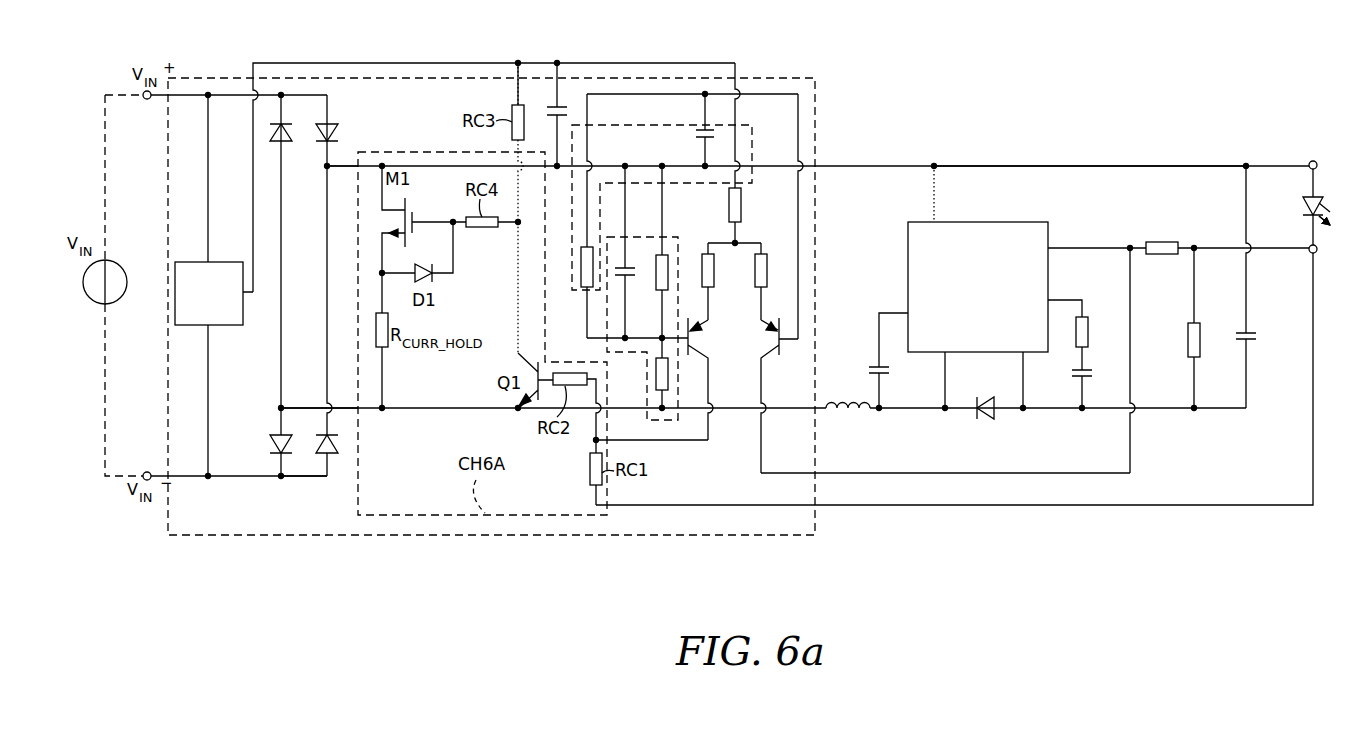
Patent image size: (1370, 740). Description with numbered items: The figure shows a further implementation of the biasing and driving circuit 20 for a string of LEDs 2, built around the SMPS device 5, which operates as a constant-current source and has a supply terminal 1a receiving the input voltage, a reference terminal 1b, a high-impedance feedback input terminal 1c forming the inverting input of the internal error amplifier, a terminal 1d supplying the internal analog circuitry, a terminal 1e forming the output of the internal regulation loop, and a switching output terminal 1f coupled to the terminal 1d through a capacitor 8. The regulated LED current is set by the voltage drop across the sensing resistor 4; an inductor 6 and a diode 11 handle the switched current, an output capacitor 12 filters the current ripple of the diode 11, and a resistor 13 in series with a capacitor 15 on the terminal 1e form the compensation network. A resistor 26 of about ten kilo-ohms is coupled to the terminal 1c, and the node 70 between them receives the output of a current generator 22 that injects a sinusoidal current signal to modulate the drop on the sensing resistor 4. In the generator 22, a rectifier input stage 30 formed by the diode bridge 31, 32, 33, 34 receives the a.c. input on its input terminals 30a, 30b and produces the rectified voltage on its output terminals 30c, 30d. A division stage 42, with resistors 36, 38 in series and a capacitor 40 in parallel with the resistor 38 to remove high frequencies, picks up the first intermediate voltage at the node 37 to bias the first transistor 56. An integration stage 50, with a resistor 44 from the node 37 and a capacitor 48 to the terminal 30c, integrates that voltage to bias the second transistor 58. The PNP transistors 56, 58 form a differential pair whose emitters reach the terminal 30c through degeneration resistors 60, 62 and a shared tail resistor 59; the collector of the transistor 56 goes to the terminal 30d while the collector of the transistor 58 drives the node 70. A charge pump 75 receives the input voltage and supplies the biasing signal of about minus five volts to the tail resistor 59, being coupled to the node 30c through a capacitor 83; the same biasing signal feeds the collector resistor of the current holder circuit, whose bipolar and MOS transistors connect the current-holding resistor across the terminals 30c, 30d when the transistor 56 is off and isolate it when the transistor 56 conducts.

The string of LEDs 2 is at (1305, 200).
The sensing resistor 4 is at (1200, 326).
The SMPS device 5 is at (992, 235).
The inductor 6 is at (838, 404).
The capacitor 8 is at (882, 365).
The diode 11 is at (985, 421).
The output capacitor 12 is at (1252, 331).
The resistor 13 is at (1087, 317).
The capacitor 15 is at (1075, 378).
The biasing and driving circuit 20 is at (968, 118).
The current generator 22 is at (768, 77).
The resistor 26 is at (1162, 256).
The rectifier input stage 30 is at (267, 324).
The input terminal of the rectifier 30a is at (283, 93).
The input terminal of the rectifier 30b is at (281, 475).
The output terminal of the rectifier 30c is at (337, 287).
The output terminal of the rectifier 30d is at (283, 407).
The bridge diode 31 is at (290, 134).
The bridge diode 32 is at (317, 137).
The bridge diode 33 is at (275, 434).
The bridge diode 34 is at (331, 455).
The resistor 36 is at (655, 373).
The node 37 is at (661, 338).
The resistor 38 is at (657, 276).
The capacitor 40 is at (627, 280).
The division stage 42 is at (678, 353).
The resistor 44 is at (585, 290).
The capacitor 48 is at (702, 134).
The integration stage 50 is at (602, 125).
The first transistor 56 is at (702, 353).
The second transistor 58 is at (768, 359).
The tail resistor 59 is at (741, 206).
The degeneration resistor 60 is at (714, 271).
The degeneration resistor 62 is at (765, 271).
The node 70 is at (1128, 245).
The charge pump 75 is at (190, 261).
The capacitor 83 is at (560, 105).
The supply terminal 1a is at (934, 218).
The reference terminal 1b is at (1023, 356).
The feedback input terminal 1c is at (1048, 248).
The terminal 1d is at (908, 313).
The terminal 1e is at (1048, 300).
The terminal 1f is at (945, 356).